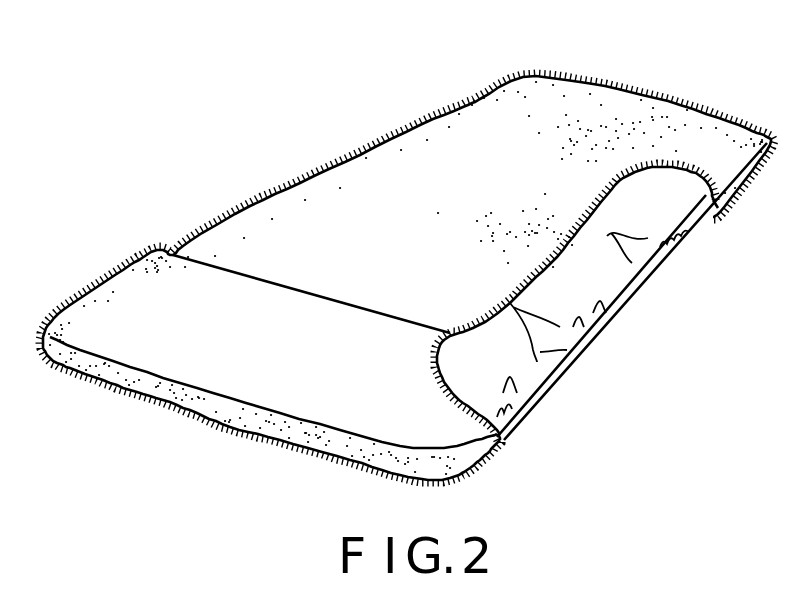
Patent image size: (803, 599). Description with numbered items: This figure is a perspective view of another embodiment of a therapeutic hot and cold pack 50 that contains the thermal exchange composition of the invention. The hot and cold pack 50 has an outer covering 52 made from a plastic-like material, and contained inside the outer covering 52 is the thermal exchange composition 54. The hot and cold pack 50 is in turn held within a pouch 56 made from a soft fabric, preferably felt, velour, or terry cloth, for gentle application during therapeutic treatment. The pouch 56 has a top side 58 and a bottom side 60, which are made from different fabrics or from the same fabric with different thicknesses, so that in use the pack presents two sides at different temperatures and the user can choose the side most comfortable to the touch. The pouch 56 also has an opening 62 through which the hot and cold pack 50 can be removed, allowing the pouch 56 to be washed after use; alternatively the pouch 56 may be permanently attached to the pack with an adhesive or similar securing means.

The hot and cold pack 50 is at (287, 132).
The outer covering 52 is at (640, 288).
The thermal exchange composition 54 is at (567, 350).
The pouch 56 is at (574, 86).
The top side 58 is at (497, 437).
The bottom side 60 is at (467, 473).
The opening 62 is at (222, 280).